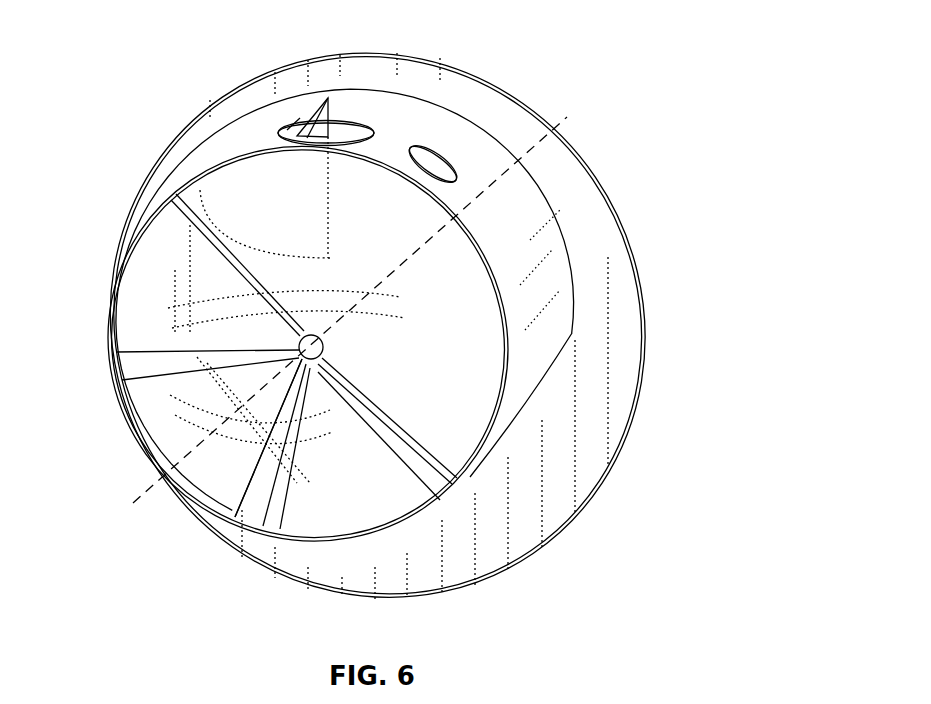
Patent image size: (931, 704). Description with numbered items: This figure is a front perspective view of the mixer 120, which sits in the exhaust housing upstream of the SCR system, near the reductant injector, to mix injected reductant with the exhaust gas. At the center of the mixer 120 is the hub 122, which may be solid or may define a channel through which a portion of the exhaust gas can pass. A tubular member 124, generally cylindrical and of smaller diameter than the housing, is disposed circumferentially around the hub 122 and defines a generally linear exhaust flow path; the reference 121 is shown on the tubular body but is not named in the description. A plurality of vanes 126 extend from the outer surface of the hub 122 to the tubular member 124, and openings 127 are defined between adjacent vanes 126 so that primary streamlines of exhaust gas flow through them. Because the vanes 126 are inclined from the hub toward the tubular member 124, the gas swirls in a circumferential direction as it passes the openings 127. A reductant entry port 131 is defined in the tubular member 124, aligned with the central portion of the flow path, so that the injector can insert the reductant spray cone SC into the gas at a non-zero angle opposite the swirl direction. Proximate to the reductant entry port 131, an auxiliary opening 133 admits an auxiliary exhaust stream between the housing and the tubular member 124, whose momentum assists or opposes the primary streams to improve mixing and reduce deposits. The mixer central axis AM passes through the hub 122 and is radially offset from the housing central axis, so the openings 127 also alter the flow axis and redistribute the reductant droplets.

The mixer 120 is at (378, 351).
The outer rim 121 is at (640, 412).
The hub 122 is at (540, 385).
The tubular member 124 is at (295, 338).
The vanes 126 is at (357, 460).
The openings 127 is at (440, 500).
The reductant entry port 131 is at (348, 131).
The auxiliary opening 133 is at (433, 152).
The spray cone SC is at (287, 130).
The mixer central axis AM is at (338, 326).